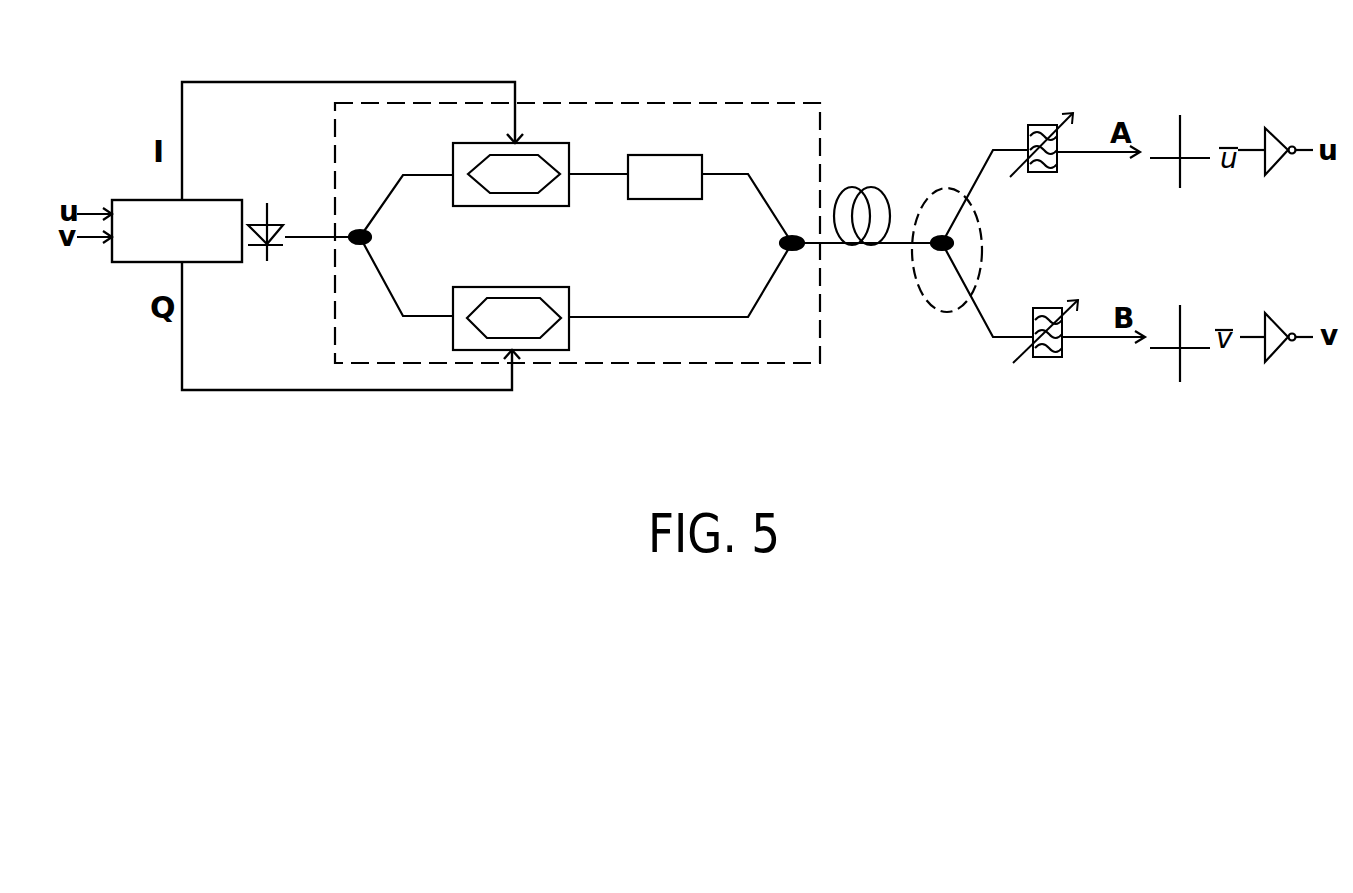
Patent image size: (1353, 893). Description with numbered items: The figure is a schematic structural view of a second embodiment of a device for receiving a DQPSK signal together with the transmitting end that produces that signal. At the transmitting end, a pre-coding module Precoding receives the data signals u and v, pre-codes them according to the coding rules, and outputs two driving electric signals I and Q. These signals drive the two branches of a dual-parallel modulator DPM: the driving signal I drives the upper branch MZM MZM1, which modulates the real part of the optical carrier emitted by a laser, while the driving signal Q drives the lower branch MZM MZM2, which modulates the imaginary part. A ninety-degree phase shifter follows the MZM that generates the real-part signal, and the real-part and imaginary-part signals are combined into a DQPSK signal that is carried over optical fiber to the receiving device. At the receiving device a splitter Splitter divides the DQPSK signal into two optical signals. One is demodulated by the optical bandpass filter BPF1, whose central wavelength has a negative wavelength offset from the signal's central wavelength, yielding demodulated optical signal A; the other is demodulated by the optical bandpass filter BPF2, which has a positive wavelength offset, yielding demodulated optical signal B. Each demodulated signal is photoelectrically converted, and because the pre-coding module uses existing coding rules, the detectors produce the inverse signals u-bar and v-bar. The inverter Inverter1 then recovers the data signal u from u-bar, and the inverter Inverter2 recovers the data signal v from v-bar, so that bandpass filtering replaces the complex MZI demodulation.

The pre-coding module Precoding is at (177, 231).
The dual-parallel modulator DPM is at (577, 233).
The upper branch MZM MZM1 is at (511, 193).
The lower branch MZM MZM2 is at (511, 303).
The splitter Splitter is at (959, 243).
The optical bandpass filter BPF1 is at (1044, 128).
The optical bandpass filter BPF2 is at (1046, 313).
The inverter Inverter1 is at (1274, 173).
The inverter Inverter2 is at (1274, 356).